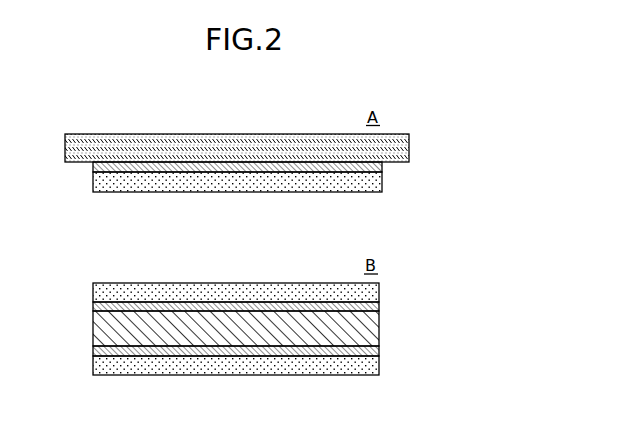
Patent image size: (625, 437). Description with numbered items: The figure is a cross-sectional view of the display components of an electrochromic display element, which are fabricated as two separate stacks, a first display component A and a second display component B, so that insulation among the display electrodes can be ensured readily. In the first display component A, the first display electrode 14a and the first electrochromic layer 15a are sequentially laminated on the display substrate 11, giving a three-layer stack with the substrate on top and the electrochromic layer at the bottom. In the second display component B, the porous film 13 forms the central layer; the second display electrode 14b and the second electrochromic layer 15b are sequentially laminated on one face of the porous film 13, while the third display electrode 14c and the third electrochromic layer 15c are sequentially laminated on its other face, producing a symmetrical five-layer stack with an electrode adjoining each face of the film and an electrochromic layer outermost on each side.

The display substrate 11 is at (398, 146).
The porous film 13 is at (372, 331).
The first display electrode 14a is at (381, 166).
The second display electrode 14b is at (376, 306).
The third display electrode 14c is at (376, 352).
The first electrochromic layer 15a is at (378, 183).
The second electrochromic layer 15b is at (374, 296).
The third electrochromic layer 15c is at (372, 371).